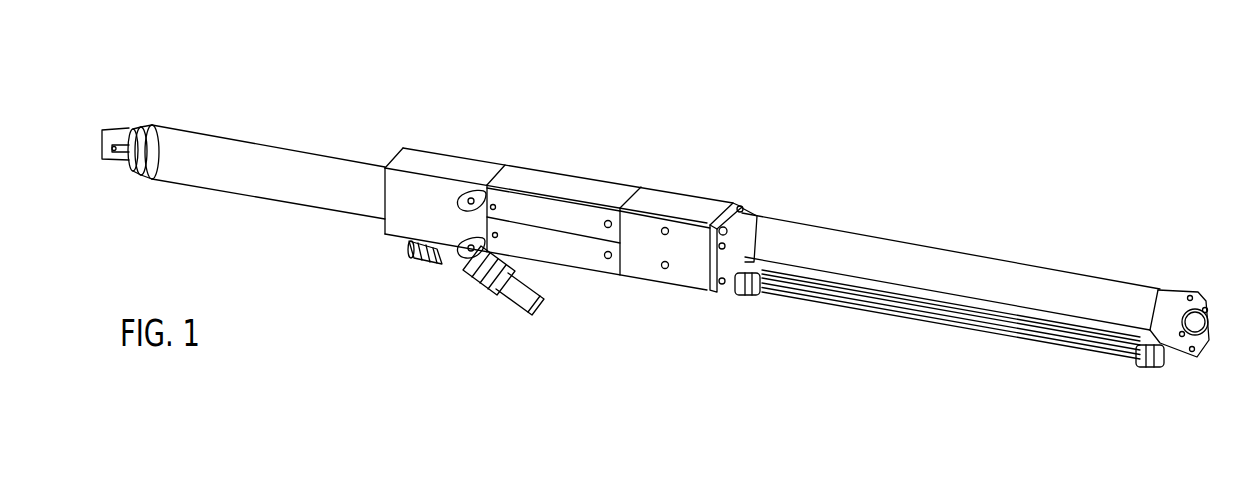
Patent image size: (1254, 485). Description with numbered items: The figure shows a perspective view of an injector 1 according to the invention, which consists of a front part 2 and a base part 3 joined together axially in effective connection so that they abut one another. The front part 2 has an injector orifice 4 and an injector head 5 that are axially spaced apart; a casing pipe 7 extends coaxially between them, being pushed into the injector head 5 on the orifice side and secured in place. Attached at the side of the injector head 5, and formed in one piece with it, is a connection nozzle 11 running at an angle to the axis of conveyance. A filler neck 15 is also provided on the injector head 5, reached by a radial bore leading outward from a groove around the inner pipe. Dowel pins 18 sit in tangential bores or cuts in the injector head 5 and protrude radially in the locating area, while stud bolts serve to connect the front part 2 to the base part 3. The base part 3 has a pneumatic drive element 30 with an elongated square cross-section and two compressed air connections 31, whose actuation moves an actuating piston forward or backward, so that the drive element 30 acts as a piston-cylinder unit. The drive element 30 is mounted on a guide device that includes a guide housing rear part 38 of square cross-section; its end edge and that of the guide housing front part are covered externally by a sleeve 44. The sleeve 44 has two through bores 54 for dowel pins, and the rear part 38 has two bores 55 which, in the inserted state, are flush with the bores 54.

The injector 1 is at (692, 326).
The front part 2 is at (335, 148).
The base part 3 is at (848, 228).
The injector orifice 4 is at (127, 119).
The injector head 5 is at (442, 148).
The casing pipe 7 is at (248, 153).
The connection nozzle 11 is at (467, 270).
The filler neck 15 is at (411, 259).
The dowel pins 18 is at (478, 188).
The pneumatic drive element 30 is at (1043, 278).
The compressed air connections 31 is at (752, 298).
The guide housing rear part 38 is at (680, 207).
The sleeve 44 is at (578, 184).
The through bores 54 is at (607, 229).
The bores 55 is at (664, 236).